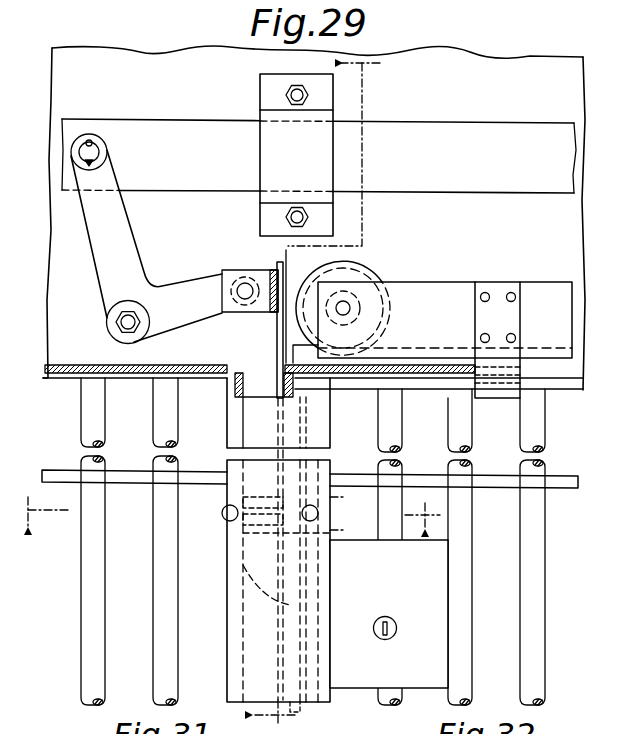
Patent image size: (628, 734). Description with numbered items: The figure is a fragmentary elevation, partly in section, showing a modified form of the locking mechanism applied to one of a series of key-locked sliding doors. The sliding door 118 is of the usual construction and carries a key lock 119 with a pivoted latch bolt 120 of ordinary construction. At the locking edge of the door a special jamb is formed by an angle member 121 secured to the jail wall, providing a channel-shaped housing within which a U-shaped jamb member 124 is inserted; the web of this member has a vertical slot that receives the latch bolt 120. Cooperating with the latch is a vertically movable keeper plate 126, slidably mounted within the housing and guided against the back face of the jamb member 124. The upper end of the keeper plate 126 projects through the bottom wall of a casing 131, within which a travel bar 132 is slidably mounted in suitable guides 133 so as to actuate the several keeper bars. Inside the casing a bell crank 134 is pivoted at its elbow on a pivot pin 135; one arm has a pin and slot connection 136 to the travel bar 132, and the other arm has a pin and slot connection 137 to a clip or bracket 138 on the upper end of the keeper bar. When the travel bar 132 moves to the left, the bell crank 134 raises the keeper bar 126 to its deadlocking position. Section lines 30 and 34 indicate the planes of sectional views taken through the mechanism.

The section line 30- 30 is at (330, 392).
The section line 34- 34 is at (231, 520).
The sliding door 118 is at (553, 389).
The key lock 119 is at (427, 585).
The latch bolt 120 is at (243, 612).
The angle member 121 is at (236, 390).
The U-shaped jamb member 124 is at (292, 397).
The keeper plate 126 is at (277, 347).
The casing 131 is at (574, 229).
The travel bar 132 is at (497, 132).
The guides 133 is at (268, 143).
The bell crank 134 is at (114, 221).
The pivot pin 135 is at (126, 323).
The pin and slot connection 136 is at (96, 142).
The pin and slot connection 137 is at (245, 283).
The clip or bracket 138 is at (272, 278).